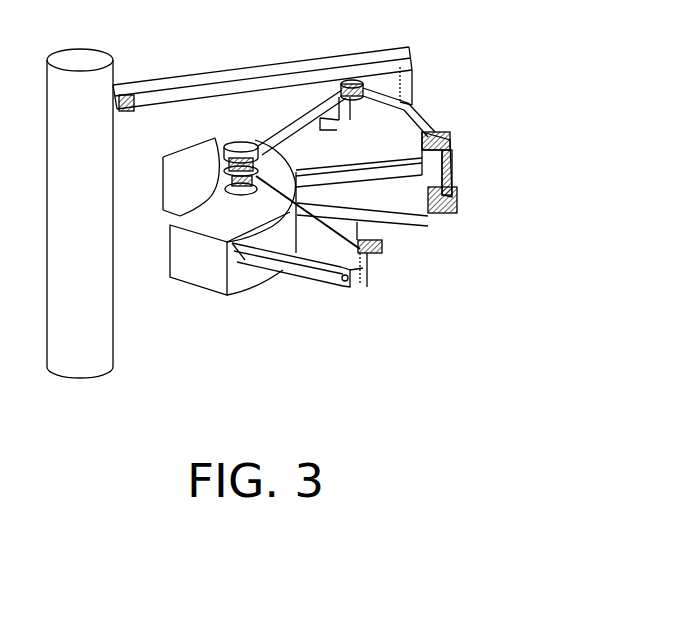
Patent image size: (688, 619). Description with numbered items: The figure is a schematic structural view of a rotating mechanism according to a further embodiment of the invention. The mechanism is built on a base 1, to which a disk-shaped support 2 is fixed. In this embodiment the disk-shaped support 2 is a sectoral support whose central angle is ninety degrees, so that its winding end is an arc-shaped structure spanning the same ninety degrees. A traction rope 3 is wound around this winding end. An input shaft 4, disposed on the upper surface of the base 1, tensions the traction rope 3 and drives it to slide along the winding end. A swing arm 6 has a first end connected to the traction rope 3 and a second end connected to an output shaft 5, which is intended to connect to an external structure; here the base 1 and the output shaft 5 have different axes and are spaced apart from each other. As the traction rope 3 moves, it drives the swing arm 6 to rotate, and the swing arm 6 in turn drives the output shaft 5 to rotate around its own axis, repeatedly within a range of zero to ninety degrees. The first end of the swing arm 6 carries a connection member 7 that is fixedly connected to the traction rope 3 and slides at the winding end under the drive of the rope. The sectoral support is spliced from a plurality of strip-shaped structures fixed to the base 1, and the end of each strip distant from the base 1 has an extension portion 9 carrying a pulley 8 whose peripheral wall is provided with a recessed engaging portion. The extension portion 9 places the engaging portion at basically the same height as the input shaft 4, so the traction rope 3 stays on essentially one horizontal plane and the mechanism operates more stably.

The base 1 is at (205, 275).
The disk-shaped support 2 is at (313, 263).
The traction rope 3 is at (450, 167).
The input shaft 4 is at (243, 145).
The output shaft 5 is at (87, 350).
The swing arm 6 is at (227, 85).
The connection member 7 is at (407, 108).
The pulley 8 is at (455, 200).
The extension portion 9 is at (363, 262).